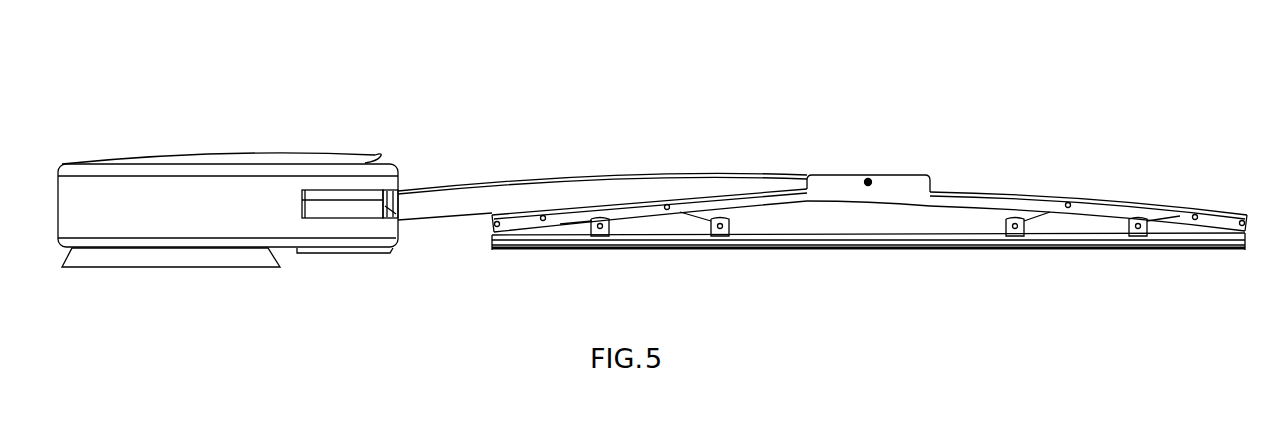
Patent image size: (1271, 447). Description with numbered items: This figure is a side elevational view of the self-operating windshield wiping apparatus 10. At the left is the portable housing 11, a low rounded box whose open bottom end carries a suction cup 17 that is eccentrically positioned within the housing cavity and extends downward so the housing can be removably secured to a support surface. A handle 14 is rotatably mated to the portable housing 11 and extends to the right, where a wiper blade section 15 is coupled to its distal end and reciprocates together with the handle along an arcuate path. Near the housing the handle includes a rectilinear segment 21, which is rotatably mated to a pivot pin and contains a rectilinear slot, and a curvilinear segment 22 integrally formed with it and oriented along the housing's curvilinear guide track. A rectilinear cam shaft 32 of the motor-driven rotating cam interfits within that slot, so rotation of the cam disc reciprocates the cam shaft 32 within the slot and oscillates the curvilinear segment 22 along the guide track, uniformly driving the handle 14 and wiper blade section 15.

The self-operating windshield wiping apparatus 10 is at (672, 128).
The portable housing 11 is at (142, 197).
The handle 14 is at (548, 188).
The wiper blade section 15 is at (982, 202).
The suction cup 17 is at (242, 255).
The rectilinear segment 21 is at (347, 212).
The curvilinear segment 22 is at (387, 213).
The rectilinear cam shaft 32 is at (325, 195).